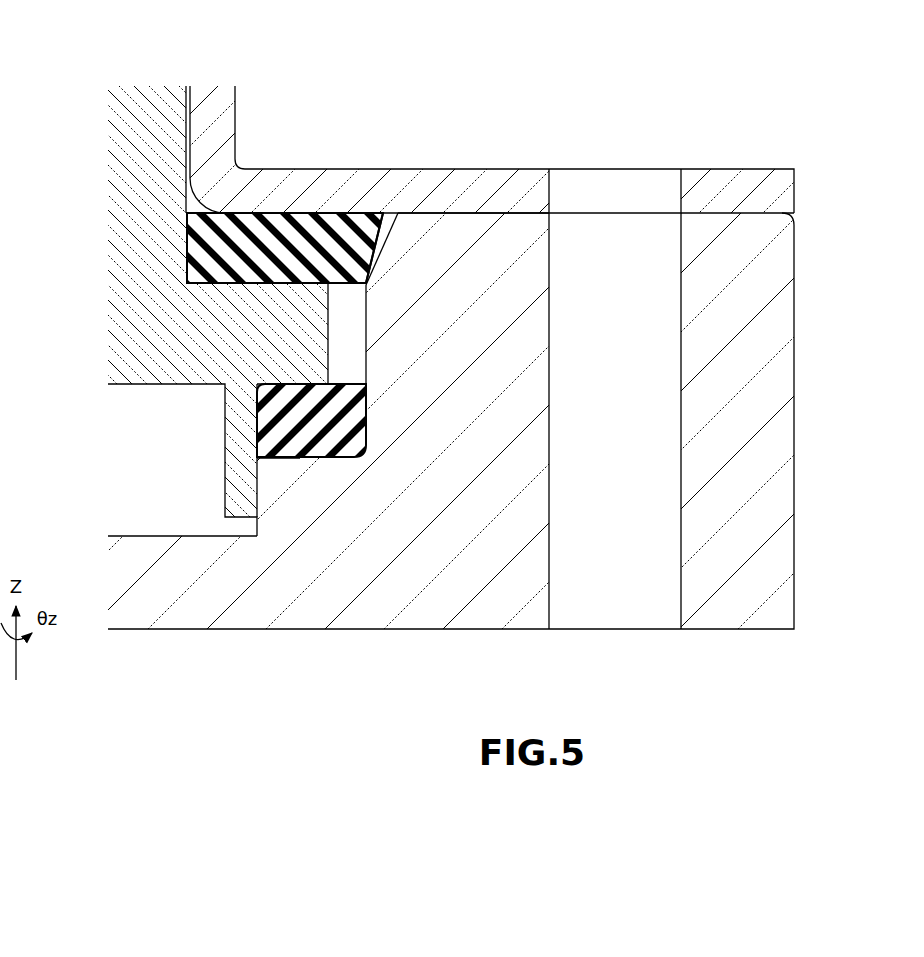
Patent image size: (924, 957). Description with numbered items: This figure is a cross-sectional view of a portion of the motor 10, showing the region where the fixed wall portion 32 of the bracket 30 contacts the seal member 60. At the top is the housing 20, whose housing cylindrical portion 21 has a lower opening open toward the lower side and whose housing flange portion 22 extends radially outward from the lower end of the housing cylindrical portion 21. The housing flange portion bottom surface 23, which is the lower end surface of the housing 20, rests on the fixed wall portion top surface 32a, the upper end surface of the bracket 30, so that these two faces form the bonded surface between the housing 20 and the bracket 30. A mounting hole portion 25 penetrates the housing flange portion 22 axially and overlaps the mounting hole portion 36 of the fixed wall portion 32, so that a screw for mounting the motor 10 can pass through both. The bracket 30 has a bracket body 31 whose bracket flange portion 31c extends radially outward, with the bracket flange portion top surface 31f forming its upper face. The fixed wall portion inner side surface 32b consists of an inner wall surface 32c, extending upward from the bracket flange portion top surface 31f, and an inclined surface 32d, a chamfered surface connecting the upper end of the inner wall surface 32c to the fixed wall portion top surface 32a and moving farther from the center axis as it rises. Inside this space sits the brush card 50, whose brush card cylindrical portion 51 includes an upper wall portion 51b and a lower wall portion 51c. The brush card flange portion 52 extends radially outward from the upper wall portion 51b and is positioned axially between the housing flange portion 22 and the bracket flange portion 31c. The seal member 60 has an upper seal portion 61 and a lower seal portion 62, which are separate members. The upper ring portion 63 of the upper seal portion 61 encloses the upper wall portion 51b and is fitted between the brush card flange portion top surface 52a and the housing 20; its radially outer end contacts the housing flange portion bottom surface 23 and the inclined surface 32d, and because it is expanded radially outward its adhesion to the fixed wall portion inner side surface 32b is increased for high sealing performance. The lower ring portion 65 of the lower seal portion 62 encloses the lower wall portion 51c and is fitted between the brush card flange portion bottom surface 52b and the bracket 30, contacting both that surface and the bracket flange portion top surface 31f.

The motor 10 is at (851, 137).
The housing 20 is at (766, 162).
The housing cylindrical portion 21 is at (226, 110).
The housing flange portion 22 is at (778, 196).
The housing flange portion bottom surface 23 is at (488, 213).
The mounting hole portion 25 is at (681, 193).
The bracket 30 is at (799, 520).
The bracket body 31 is at (246, 501).
The bracket flange portion 31c is at (353, 392).
The bracket flange portion top surface 31f is at (306, 460).
The fixed wall portion 32 is at (498, 572).
The fixed wall portion top surface 32a is at (527, 212).
The fixed wall portion inner side surface 32b is at (430, 121).
The inner wall surface 32c is at (340, 232).
The inclined surface 32d is at (384, 212).
The mounting hole portion 36 is at (550, 572).
The brush card 50 is at (104, 332).
The brush card cylindrical portion 51 is at (157, 390).
The upper wall portion 51b is at (152, 163).
The lower wall portion 51c is at (243, 508).
The brush card flange portion 52 is at (265, 340).
The brush card flange portion top surface 52a is at (368, 290).
The brush card flange portion bottom surface 52b is at (313, 386).
The seal member 60 is at (236, 207).
The upper seal portion 61 is at (249, 250).
The lower seal portion 62 is at (246, 434).
The upper ring portion 63 is at (233, 256).
The lower ring portion 65 is at (295, 433).